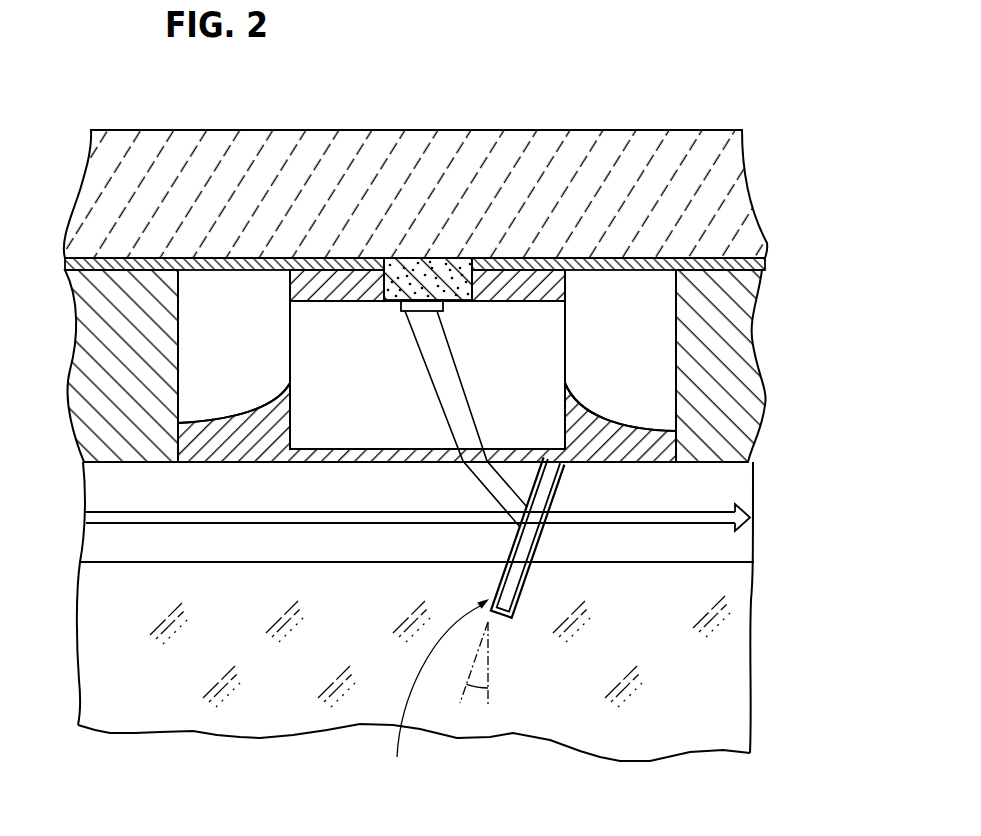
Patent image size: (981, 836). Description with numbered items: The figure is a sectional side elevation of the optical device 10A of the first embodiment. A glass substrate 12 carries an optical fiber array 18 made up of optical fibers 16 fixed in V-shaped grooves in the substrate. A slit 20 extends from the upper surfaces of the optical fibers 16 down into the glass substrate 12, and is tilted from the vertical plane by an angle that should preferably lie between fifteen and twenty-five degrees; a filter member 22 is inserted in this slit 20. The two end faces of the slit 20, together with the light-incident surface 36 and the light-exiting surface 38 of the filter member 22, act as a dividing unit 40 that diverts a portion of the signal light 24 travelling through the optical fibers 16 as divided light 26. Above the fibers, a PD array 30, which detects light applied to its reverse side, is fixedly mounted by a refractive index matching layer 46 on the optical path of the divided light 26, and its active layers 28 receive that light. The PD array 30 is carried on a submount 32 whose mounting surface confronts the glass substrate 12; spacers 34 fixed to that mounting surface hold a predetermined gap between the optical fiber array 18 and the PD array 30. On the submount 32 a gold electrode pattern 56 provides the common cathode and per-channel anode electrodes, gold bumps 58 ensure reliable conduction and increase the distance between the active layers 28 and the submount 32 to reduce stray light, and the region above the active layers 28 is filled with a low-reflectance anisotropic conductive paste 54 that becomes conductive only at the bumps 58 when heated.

The optical device 10A is at (487, 47).
The glass substrate 12 is at (628, 748).
The optical fibers 16 is at (147, 460).
The optical fiber array 18 is at (112, 567).
The slit 20 is at (514, 601).
The filter member 22 is at (524, 553).
The signal light 24 is at (625, 522).
The divided light 26 is at (493, 480).
The active layers 28 is at (415, 302).
The PD array 30 is at (345, 365).
The submount 32 is at (632, 137).
The spacers 34 is at (100, 365).
The light-incident surface 36 is at (517, 541).
The light-exiting surface 38 is at (534, 545).
The dividing unit 40 is at (435, 695).
The refractive index matching layer 46 is at (364, 456).
The anisotropic conductive paste 54 is at (455, 275).
The gold electrode pattern 56 is at (236, 262).
The bumps 58 is at (335, 276).